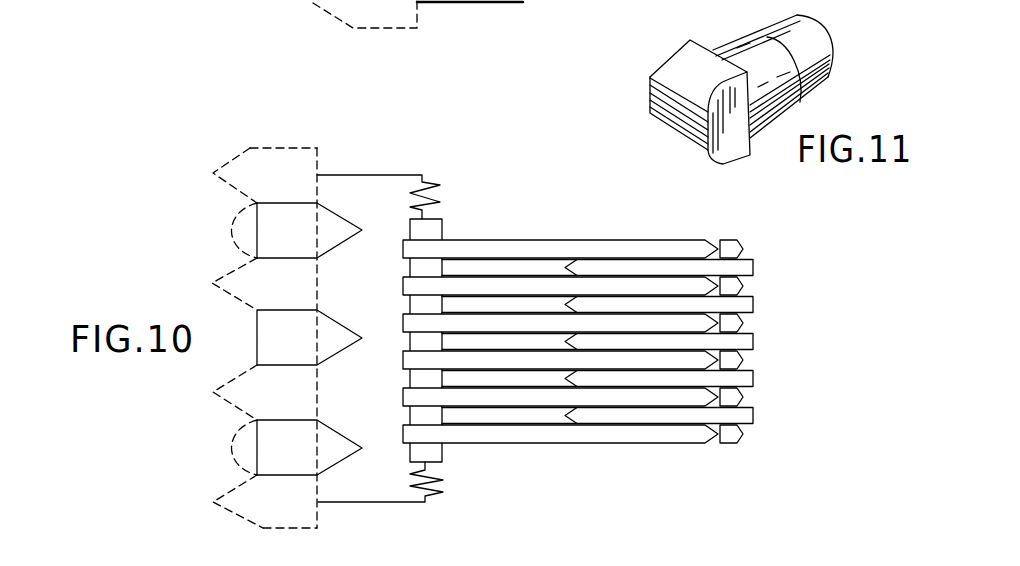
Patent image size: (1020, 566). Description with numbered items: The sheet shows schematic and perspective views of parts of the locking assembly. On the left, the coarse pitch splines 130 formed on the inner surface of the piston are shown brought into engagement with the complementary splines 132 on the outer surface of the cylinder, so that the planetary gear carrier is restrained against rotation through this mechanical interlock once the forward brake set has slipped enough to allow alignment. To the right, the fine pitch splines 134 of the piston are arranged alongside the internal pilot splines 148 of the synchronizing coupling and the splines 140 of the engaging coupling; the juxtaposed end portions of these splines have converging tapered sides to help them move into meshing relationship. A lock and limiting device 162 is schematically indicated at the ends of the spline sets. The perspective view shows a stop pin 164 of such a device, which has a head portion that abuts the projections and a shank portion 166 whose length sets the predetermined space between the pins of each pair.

In FIG. 10, the coarse pitch splines 130 is at (337, 240).
In FIG. 10, the complementary splines 132 is at (230, 231).
In FIG. 10, the fine pitch splines 134 is at (530, 288).
In FIG. 10, the splines of engaging coupling 140 is at (753, 265).
In FIG. 10, the internal pilot splines 148 is at (728, 285).
In FIG. 10, the lock and limiting device 162 is at (443, 193).
In FIG. 11, the stop pin 164 is at (651, 90).
In FIG. 11, the shank portion 166 is at (823, 32).